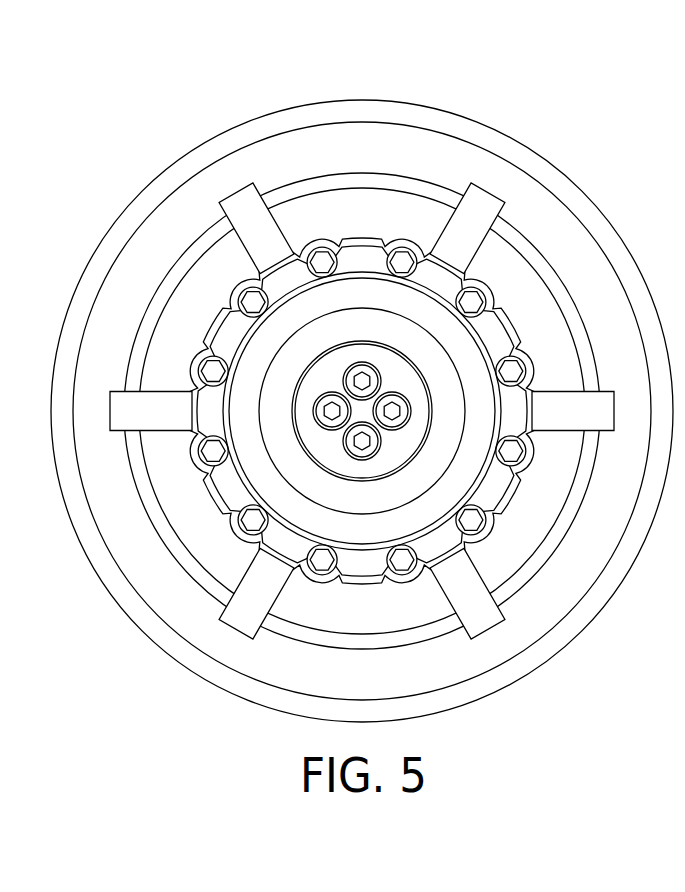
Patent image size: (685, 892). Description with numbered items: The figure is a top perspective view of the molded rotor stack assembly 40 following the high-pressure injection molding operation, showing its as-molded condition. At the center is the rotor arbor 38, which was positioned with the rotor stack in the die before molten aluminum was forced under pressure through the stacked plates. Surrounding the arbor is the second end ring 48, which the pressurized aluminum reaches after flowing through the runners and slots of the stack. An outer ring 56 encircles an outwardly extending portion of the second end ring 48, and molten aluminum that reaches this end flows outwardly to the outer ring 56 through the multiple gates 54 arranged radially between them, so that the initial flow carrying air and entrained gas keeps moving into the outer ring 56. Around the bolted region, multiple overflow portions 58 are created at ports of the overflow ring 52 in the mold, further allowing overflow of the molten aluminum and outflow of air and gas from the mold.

The rotor arbor 38 is at (326, 445).
The molded rotor stack assembly 40 is at (600, 168).
The second end ring 48 is at (158, 350).
The overflow ring 52 is at (227, 328).
The gates 54 is at (124, 410).
The outer ring 56 is at (108, 474).
The overflow portions 58 is at (322, 260).